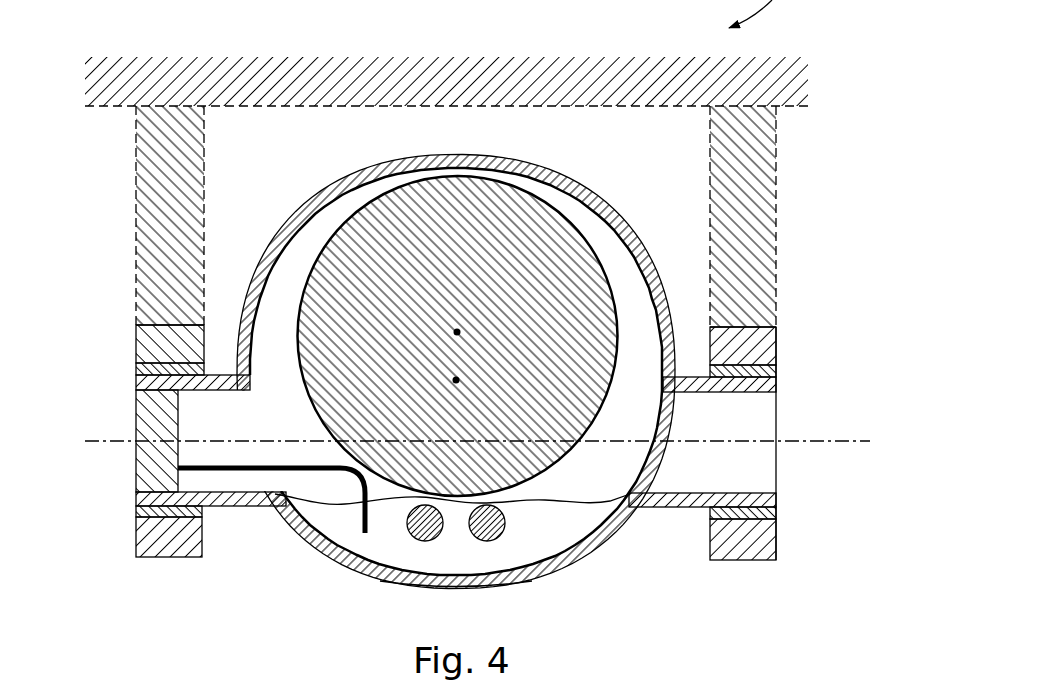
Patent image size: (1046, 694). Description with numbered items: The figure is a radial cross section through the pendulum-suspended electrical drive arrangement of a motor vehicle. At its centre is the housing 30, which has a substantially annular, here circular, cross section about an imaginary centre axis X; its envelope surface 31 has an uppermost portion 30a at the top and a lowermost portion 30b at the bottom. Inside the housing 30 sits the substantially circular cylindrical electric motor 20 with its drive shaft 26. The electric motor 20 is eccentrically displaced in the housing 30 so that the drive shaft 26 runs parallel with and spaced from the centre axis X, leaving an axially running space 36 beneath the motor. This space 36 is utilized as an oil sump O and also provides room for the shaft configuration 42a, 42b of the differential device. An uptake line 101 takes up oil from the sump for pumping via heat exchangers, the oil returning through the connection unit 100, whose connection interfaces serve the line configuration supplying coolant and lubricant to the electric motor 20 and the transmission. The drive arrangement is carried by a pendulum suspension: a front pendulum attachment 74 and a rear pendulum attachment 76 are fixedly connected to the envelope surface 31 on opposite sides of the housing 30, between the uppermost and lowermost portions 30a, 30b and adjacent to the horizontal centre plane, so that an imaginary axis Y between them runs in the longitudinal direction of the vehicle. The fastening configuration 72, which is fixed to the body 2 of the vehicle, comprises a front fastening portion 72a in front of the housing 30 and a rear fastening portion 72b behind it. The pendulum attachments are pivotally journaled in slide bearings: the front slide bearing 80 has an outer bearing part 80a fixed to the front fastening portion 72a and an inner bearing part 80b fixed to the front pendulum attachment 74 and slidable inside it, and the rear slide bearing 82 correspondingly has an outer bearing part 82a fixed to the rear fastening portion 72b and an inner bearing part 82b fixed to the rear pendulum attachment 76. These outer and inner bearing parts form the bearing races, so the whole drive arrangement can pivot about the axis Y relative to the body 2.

The body 2 is at (574, 60).
The electric motor 20 is at (322, 243).
The drive shaft 26 is at (458, 332).
The housing 30 is at (460, 381).
The uppermost portion 30a is at (443, 156).
The lowermost portion 30b is at (436, 592).
The envelope surface 31 is at (316, 207).
The axially running space 36 is at (563, 548).
The shaft configuration 42a is at (417, 543).
The shaft configuration 42b is at (483, 546).
The fastening configuration 72 is at (136, 165).
The front fastening portion 72a is at (137, 323).
The rear fastening portion 72b is at (777, 323).
The front pendulum attachment 74 is at (254, 508).
The rear pendulum attachment 76 is at (662, 508).
The front slide bearing 80 is at (136, 503).
The outer bearing part 80a is at (137, 372).
The inner bearing part 80b is at (137, 387).
The rear slide bearing 82 is at (778, 505).
The outer bearing part 82a is at (776, 372).
The inner bearing part 82b is at (776, 383).
The connection unit 100 is at (136, 462).
The uptake line 101 is at (307, 466).
The oil sump O is at (305, 561).
The centre axis X is at (457, 380).
The axis Y is at (800, 441).